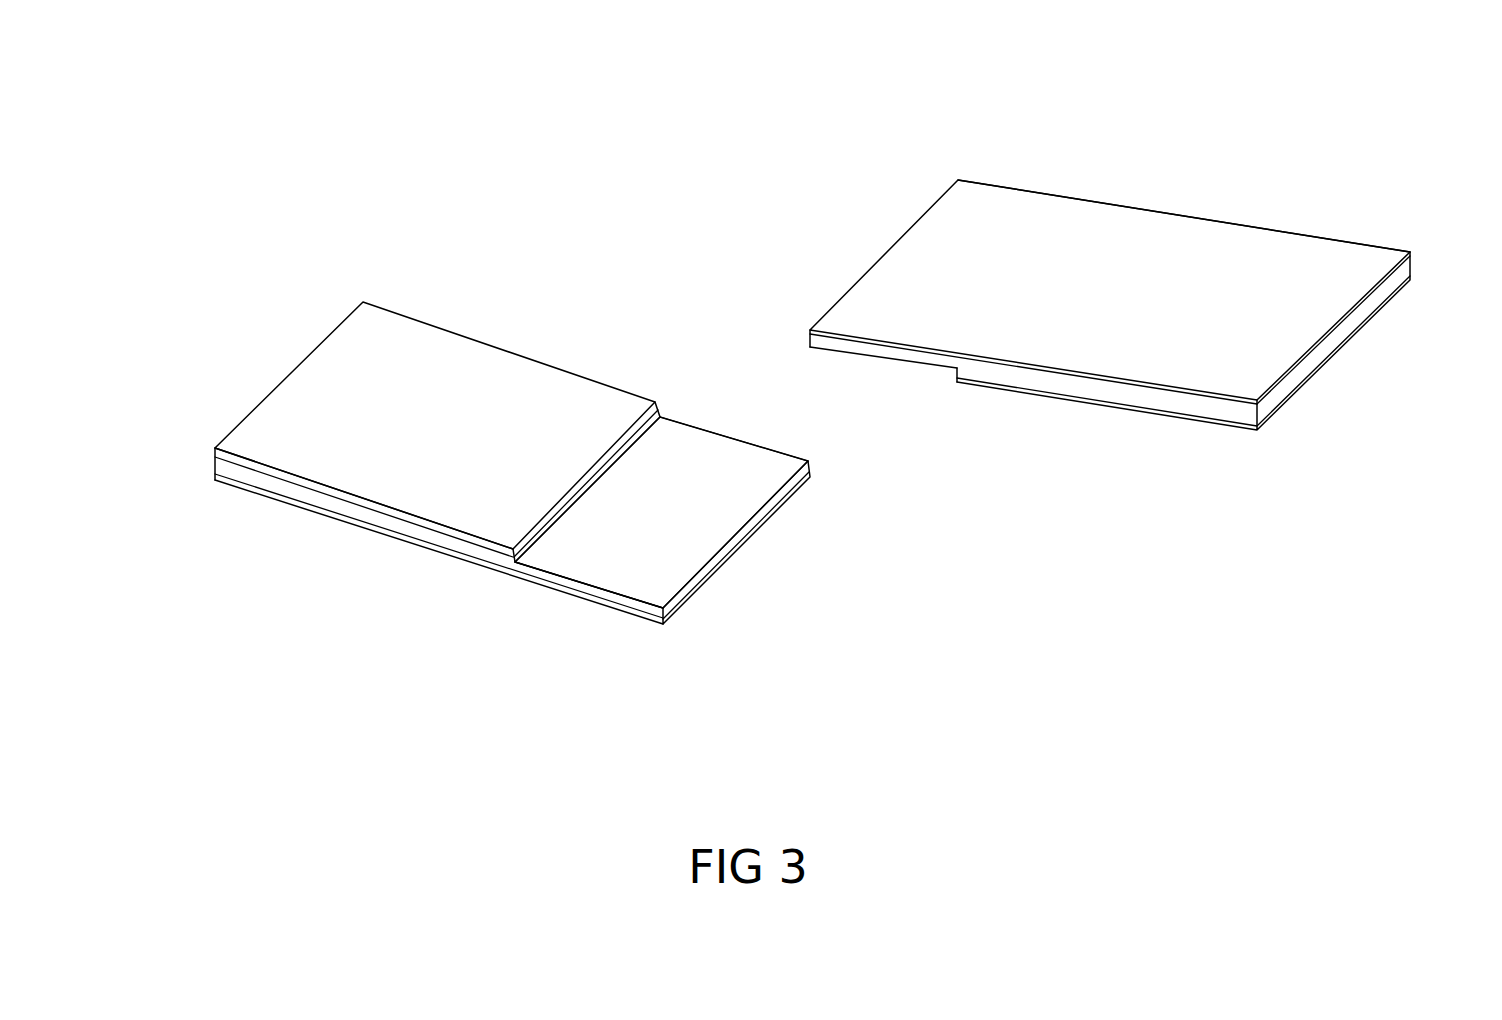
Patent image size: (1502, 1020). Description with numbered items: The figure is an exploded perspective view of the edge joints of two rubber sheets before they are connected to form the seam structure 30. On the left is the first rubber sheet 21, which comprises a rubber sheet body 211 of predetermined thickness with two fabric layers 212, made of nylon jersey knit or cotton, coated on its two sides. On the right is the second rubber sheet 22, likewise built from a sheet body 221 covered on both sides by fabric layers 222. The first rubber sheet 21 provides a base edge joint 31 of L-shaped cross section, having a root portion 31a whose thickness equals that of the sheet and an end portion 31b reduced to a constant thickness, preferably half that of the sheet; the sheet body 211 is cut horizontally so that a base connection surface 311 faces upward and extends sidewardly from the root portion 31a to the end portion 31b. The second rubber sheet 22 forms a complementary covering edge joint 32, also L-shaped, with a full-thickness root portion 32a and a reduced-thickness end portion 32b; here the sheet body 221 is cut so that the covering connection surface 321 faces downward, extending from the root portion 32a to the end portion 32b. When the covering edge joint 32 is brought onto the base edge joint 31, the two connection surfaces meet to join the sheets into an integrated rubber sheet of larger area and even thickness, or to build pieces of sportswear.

The seam structure 30 is at (772, 212).
The first rubber sheet 21 is at (288, 287).
The sheet body 211 is at (222, 463).
The fabric layers 212 is at (238, 457).
The base edge joint 31 is at (783, 655).
The base connection surface 311 is at (698, 538).
The root portion 31a is at (663, 412).
The end portion 31b is at (520, 585).
The covering edge joint 32 is at (975, 467).
The covering connection surface 321 is at (895, 362).
The root portion 32a is at (960, 380).
The end portion 32b is at (1111, 187).
The second rubber sheet 22 is at (1462, 417).
The sheet body 221 is at (1397, 275).
The fabric layers 222 is at (1410, 252).